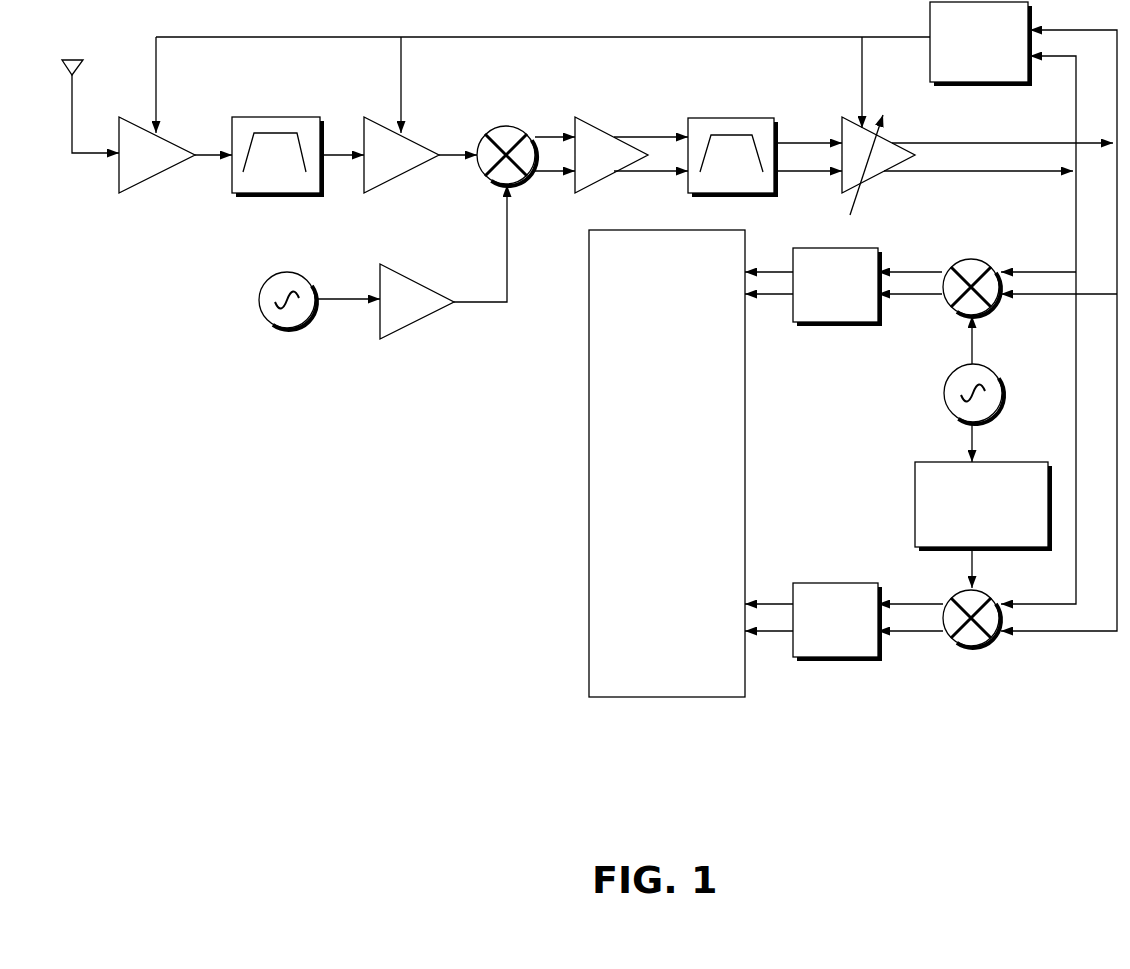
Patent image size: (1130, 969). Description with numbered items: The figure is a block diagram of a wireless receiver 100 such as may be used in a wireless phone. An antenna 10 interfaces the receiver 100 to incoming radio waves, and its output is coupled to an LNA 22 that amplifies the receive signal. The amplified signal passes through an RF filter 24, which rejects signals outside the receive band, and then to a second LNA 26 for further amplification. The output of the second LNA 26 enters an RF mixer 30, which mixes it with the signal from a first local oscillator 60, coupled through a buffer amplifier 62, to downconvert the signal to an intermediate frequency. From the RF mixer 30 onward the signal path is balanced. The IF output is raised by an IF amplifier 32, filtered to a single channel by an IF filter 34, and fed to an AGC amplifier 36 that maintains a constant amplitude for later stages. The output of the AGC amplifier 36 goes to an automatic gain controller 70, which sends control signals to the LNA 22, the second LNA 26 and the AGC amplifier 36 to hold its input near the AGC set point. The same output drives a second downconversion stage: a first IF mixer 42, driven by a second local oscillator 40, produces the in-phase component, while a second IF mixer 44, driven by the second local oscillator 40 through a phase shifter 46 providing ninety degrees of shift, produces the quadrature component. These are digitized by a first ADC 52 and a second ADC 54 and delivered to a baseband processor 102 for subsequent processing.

The antenna 10 is at (85, 94).
The LNA 22 is at (175, 155).
The RF filter 24 is at (298, 156).
The second LNA 26 is at (420, 155).
The RF mixer 30 is at (526, 144).
The IF amplifier 32 is at (631, 155).
The IF filter 34 is at (765, 156).
The AGC amplifier 36 is at (977, 165).
The second Local Oscillator 40 is at (995, 389).
The first IF mixer 42 is at (973, 274).
The second IF mixer 44 is at (986, 633).
The phase shifter 46 is at (982, 525).
The first Analog to Digital Converter 52 is at (843, 286).
The second ADC 54 is at (844, 621).
The first Local Oscillator 60 is at (311, 314).
The buffer amplifier 62 is at (443, 262).
The Automatic Gain Controller 70 is at (980, 43).
The wireless receiver 100 is at (238, 676).
The baseband processor 102 is at (667, 463).